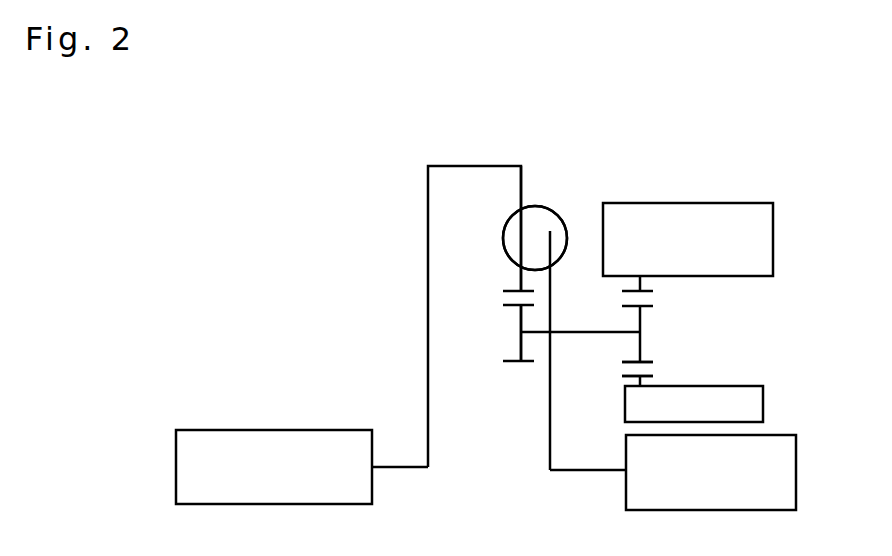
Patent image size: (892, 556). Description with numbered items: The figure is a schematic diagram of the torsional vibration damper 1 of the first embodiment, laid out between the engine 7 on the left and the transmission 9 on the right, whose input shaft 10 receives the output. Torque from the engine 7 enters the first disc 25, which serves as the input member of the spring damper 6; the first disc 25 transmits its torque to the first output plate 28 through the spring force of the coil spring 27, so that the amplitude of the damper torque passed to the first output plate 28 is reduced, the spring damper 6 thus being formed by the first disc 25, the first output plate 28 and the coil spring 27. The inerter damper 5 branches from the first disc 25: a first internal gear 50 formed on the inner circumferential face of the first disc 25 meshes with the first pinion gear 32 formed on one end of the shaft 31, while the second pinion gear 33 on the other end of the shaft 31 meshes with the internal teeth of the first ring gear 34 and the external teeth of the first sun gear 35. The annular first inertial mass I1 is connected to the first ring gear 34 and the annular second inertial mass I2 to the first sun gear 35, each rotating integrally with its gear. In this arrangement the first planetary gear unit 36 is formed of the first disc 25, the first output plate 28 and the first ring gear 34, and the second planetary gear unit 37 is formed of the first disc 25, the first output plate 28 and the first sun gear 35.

The torsional vibration damper 1 is at (362, 218).
The inerter damper 5 is at (507, 393).
The spring damper 6 is at (541, 186).
The engine 7 is at (277, 430).
The transmission 9 is at (797, 471).
The input shaft 10 is at (579, 473).
The first disc 25 is at (521, 192).
The coil spring 27 is at (503, 236).
The first output plate 28 is at (547, 405).
The shaft 31 is at (587, 334).
The first pinion gear 32 is at (518, 320).
The second pinion gear 33 is at (644, 324).
The first ring gear 34 is at (651, 291).
The first sun gear 35 is at (622, 378).
The first planetary gear unit 36 is at (580, 240).
The second planetary gear unit 37 is at (678, 362).
The first internal gear 50 is at (511, 287).
The first inertial mass I1 is at (776, 230).
The second inertial mass I2 is at (764, 400).